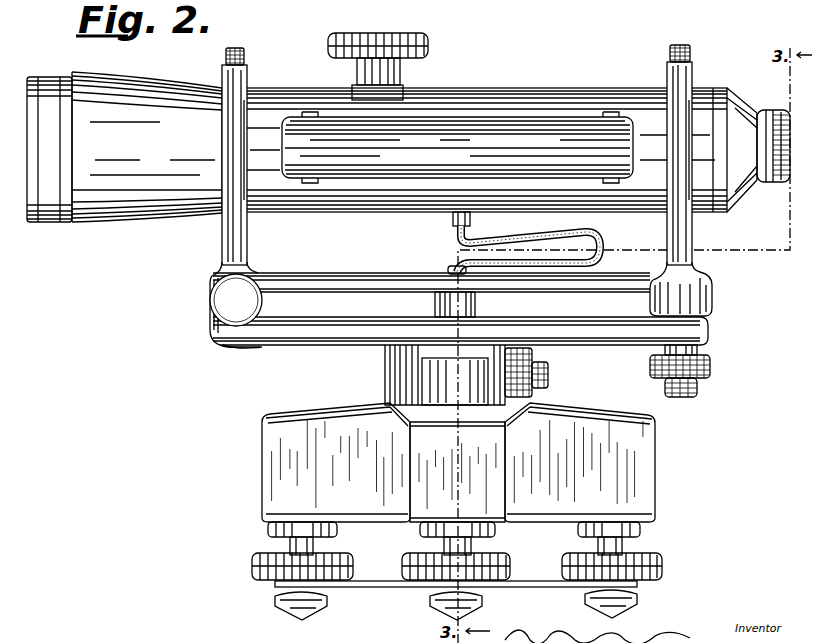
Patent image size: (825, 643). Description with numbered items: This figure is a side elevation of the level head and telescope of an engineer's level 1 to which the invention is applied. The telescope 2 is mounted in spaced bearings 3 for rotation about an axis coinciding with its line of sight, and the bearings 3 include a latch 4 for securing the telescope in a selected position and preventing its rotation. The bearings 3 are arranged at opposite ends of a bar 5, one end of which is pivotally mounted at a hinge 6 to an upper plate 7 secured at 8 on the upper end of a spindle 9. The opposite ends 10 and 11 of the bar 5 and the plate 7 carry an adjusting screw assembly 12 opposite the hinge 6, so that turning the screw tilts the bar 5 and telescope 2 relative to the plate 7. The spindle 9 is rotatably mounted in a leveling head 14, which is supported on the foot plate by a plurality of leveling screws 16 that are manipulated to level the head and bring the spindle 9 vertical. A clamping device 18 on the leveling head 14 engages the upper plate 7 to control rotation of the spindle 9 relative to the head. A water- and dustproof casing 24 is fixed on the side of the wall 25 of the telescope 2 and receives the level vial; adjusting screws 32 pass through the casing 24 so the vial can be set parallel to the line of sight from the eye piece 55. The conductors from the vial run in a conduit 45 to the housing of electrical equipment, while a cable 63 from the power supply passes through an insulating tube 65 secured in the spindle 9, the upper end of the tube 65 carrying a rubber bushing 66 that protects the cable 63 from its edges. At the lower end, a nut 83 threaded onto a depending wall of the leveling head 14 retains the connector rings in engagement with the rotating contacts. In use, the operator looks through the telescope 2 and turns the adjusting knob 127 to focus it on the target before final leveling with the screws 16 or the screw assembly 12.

The engineer's level 1 is at (204, 319).
The telescope 2 is at (180, 78).
The spaced bearings 3 is at (248, 88).
The latch 4 is at (241, 50).
The bar 5 is at (322, 268).
The pivot (hinge) 6 is at (218, 302).
The upper plate 7 is at (265, 341).
The securing point 8 is at (385, 345).
The spindle 9 is at (388, 358).
The end of bar 10 is at (713, 287).
The end of plate 11 is at (710, 330).
The adjusting screw assembly 12 is at (708, 371).
The leveling head 14 is at (263, 420).
The leveling screws 16 is at (252, 563).
The clamping device 18 is at (550, 372).
The casing 24 is at (442, 127).
The wall of telescope 25 is at (502, 102).
The adjusting screws 32 is at (307, 114).
The conduit 45 is at (452, 212).
The eye piece 55 is at (788, 127).
The cable 63 is at (456, 236).
The insulating tube 65 is at (437, 307).
The bushing 66 is at (450, 268).
The nut 83 is at (515, 549).
The adjusting knob 127 is at (418, 36).